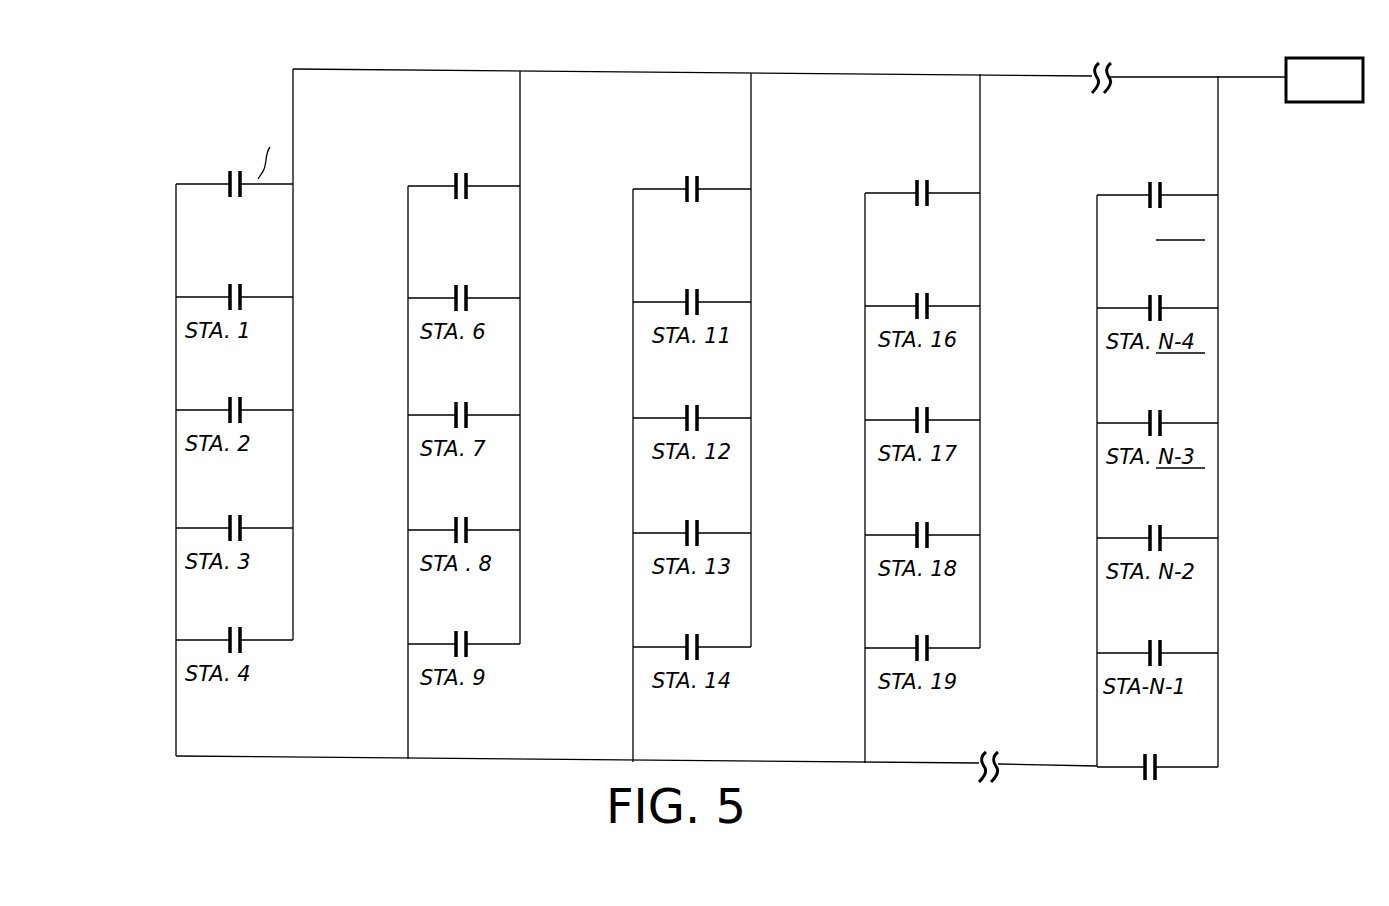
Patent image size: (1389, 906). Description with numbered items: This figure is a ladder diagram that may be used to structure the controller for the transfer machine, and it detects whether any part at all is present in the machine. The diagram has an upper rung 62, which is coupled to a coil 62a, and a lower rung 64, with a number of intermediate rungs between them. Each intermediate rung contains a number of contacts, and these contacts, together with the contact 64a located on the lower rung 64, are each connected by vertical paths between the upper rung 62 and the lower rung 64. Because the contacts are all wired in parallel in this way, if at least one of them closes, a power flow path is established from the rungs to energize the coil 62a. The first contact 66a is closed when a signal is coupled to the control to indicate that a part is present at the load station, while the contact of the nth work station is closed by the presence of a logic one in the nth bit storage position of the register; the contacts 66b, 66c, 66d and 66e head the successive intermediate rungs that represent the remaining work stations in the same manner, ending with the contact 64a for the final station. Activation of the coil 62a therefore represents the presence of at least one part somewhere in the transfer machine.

The upper rung 62 is at (674, 69).
The coil 62a is at (1312, 57).
The lower rung 64 is at (313, 756).
The contact 64a is at (1148, 751).
The contact 66a is at (224, 177).
The contact 66b is at (474, 136).
The contact 66c is at (696, 176).
The contact 66d is at (924, 178).
The contact 66e is at (1154, 178).